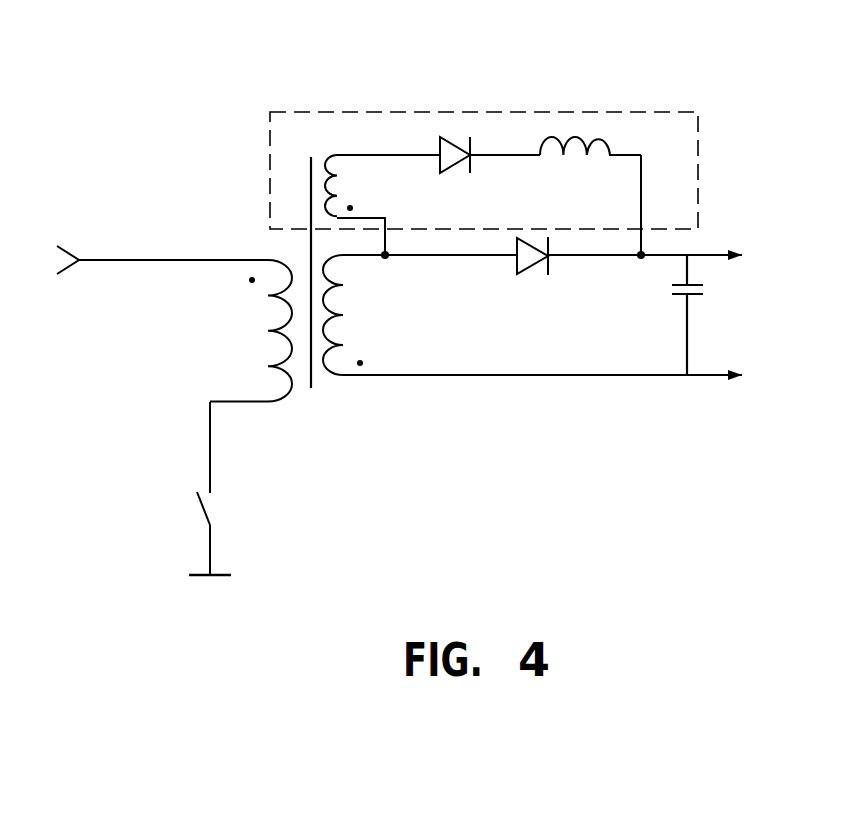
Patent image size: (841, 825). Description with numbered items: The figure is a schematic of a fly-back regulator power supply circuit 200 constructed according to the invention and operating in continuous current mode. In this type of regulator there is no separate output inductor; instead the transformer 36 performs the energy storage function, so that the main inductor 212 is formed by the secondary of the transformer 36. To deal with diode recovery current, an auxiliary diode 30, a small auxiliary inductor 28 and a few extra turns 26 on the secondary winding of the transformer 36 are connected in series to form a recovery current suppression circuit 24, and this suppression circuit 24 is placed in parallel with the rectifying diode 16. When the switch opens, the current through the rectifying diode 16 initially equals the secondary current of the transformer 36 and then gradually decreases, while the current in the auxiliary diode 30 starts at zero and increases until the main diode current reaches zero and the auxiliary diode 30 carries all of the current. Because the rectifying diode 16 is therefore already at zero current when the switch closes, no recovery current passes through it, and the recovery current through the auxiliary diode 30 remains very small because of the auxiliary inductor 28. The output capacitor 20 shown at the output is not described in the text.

The power supply circuit 200 is at (238, 604).
The transformer 36 is at (328, 397).
The main inductor 212 is at (345, 318).
The recovery current suppression circuit 24 is at (372, 111).
The turns on the secondary winding 26 is at (330, 157).
The auxiliary diode 30 is at (437, 151).
The auxiliary inductor 28 is at (608, 143).
The rectifying diode 16 is at (516, 258).
The output capacitor C 20 is at (698, 287).